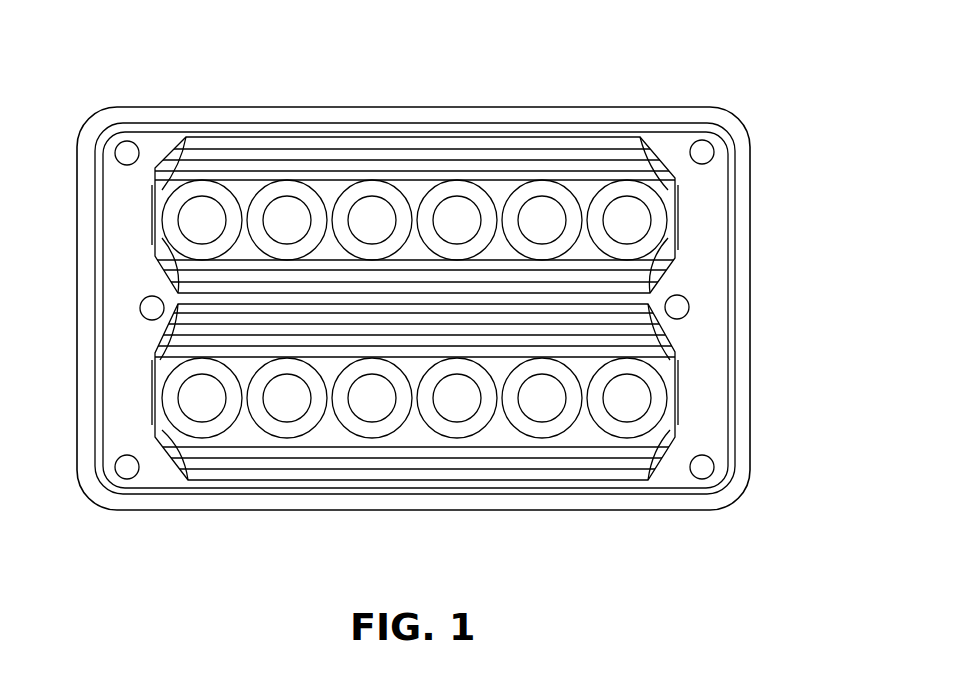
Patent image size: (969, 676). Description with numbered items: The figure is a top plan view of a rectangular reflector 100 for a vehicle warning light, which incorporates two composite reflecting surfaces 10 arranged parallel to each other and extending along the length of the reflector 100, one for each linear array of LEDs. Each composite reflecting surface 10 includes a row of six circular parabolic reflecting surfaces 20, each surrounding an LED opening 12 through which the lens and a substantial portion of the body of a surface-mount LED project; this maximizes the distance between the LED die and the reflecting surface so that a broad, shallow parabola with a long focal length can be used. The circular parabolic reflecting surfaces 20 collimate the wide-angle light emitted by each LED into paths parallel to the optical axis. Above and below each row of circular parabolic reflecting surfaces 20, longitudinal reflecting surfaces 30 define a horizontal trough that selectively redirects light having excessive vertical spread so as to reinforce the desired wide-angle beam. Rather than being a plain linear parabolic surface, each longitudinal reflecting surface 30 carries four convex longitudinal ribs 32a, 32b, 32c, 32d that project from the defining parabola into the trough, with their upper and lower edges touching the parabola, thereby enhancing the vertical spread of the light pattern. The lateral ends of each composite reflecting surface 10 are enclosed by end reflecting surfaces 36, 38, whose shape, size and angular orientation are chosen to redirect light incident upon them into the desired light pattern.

The reflector 100 is at (664, 93).
The composite reflecting surface 10 is at (433, 293).
The LED opening 12 is at (362, 230).
The circular parabolic reflecting surface 20 is at (371, 181).
The longitudinal reflecting surface 30 is at (494, 293).
The convex longitudinal rib 32a is at (621, 160).
The convex longitudinal rib 32b is at (530, 163).
The convex longitudinal rib 32c is at (312, 152).
The convex longitudinal rib 32d is at (248, 143).
The end reflecting surface 36 is at (660, 165).
The end reflecting surface 38 is at (668, 215).